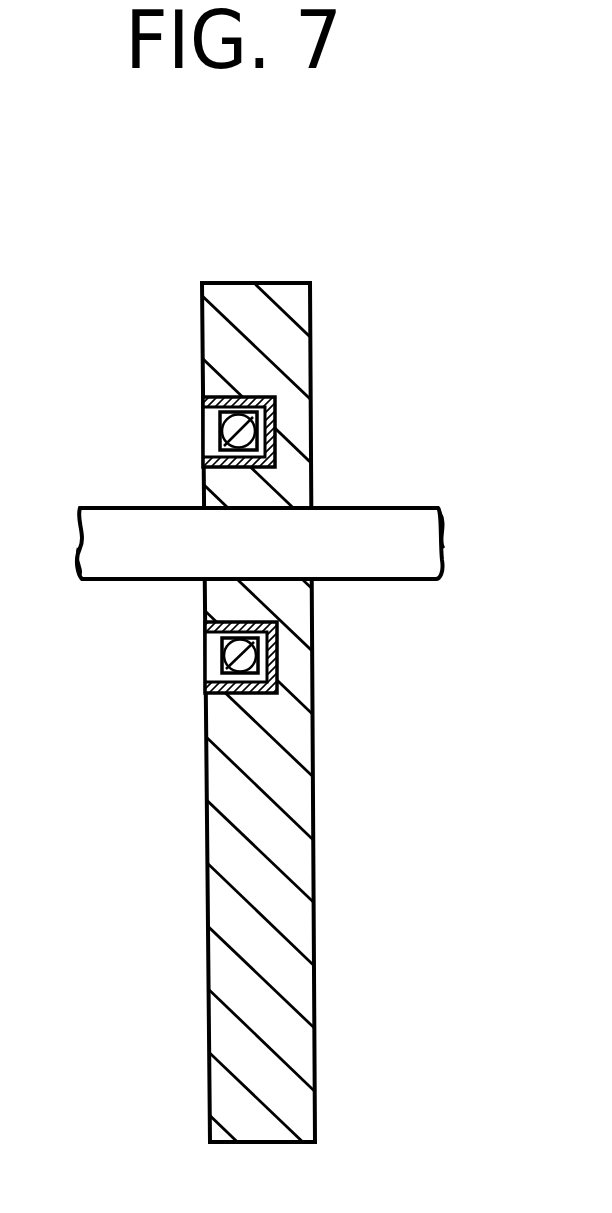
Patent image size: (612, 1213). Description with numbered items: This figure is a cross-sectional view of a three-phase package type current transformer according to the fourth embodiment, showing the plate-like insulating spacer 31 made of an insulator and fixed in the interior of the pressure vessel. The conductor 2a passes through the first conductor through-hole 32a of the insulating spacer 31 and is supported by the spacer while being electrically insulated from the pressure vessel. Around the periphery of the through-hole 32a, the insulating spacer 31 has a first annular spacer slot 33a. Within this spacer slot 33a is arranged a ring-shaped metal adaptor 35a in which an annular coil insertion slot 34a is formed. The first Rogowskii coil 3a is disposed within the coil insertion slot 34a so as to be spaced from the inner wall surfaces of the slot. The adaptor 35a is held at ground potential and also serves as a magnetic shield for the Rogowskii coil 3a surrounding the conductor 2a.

The insulating spacer 31 is at (255, 320).
The first conductor through-hole 32a is at (258, 507).
The first annular spacer slot 33a is at (248, 397).
The annular coil insertion slot 34a is at (233, 397).
The first ring-shaped metal adaptor 35a is at (276, 432).
The first Rogowskii coil 3a is at (221, 425).
The first conductor 2a is at (375, 580).